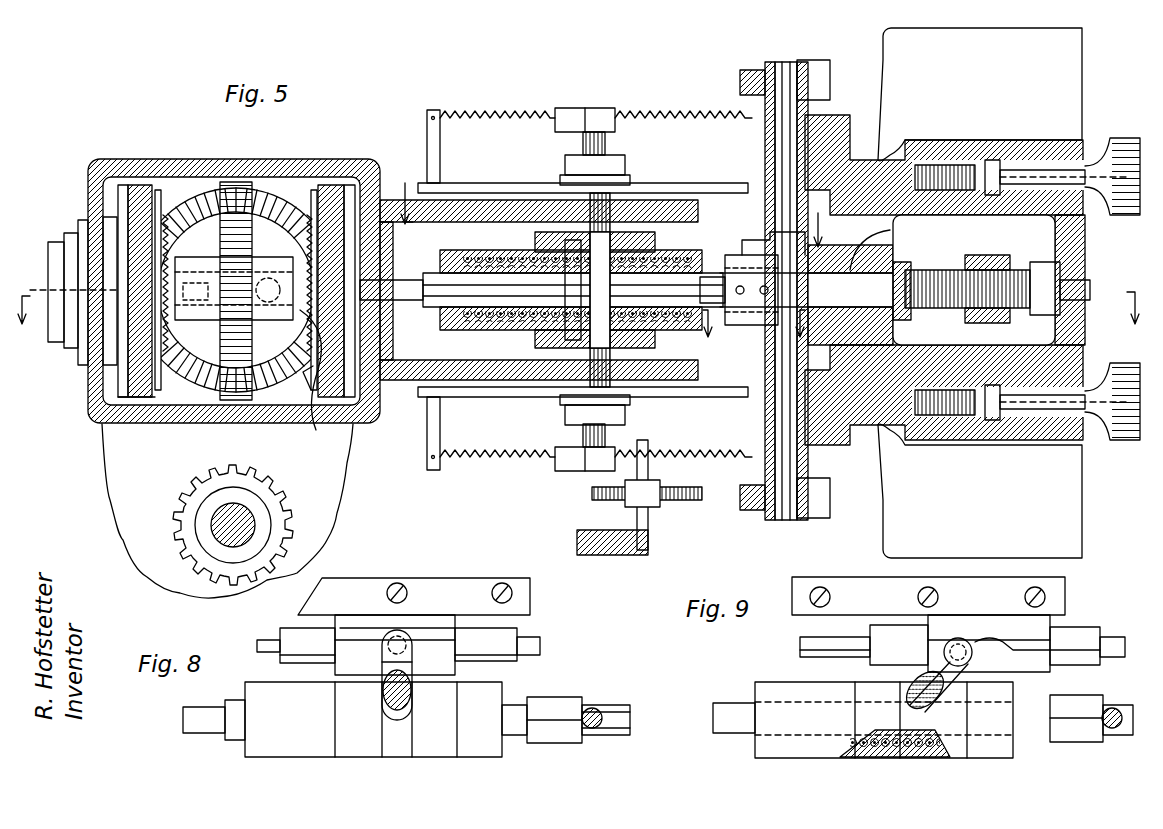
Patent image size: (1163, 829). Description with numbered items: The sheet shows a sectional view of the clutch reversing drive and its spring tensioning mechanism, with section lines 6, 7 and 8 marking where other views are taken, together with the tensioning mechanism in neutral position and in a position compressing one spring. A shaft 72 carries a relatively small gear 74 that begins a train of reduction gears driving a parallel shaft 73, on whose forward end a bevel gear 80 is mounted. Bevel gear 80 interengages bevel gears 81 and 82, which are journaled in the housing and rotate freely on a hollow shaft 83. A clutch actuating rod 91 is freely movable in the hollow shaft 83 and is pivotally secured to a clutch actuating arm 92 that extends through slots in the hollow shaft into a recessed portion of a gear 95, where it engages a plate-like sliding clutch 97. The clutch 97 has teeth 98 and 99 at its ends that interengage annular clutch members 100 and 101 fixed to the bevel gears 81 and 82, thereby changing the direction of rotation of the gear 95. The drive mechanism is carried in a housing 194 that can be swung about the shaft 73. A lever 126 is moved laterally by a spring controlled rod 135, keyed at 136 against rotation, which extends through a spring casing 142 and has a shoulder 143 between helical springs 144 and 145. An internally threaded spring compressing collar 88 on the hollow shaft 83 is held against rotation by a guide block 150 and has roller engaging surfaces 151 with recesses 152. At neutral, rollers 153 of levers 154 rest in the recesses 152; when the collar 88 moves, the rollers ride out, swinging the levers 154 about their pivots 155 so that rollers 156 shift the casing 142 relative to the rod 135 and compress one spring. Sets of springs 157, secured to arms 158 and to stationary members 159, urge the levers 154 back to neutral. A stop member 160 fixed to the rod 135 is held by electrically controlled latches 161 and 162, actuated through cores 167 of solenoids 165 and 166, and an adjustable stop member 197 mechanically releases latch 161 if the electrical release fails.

In FIG. 5, the section line 6 is at (578, 303).
In FIG. 5, the section line 7 is at (760, 337).
In FIG. 5, the section line 8 is at (610, 203).
In FIG. 5, the shaft 72 is at (215, 509).
In FIG. 5, the shaft 73 is at (266, 284).
In FIG. 5, the gear 74 is at (280, 491).
In FIG. 5, the bevel gear 80 is at (194, 200).
In FIG. 5, the bevel gear 81 is at (333, 188).
In FIG. 5, the bevel gear 82 is at (146, 188).
In FIG. 8, the hollow shaft 83 is at (555, 682).
In FIG. 9, the hollow shaft 83 is at (1102, 644).
In FIG. 8, the spring compressing collar 88 is at (434, 628).
In FIG. 9, the spring compressing collar 88 is at (963, 622).
In FIG. 8, the clutch actuating rod 91 is at (280, 644).
In FIG. 9, the clutch actuating rod 91 is at (868, 632).
In FIG. 5, the clutch actuating arm 92 is at (190, 284).
In FIG. 5, the gear 95 is at (240, 182).
In FIG. 5, the sliding clutch 97 is at (308, 310).
In FIG. 5, the teeth 98 is at (302, 360).
In FIG. 5, the teeth 99 is at (165, 314).
In FIG. 5, the annular clutch member 100 is at (314, 412).
In FIG. 5, the annular clutch member 101 is at (157, 356).
In FIG. 5, the lever 126 is at (978, 258).
In FIG. 5, the spring controlled rod 135 is at (898, 266).
In FIG. 8, the spring controlled rod 135 is at (625, 710).
In FIG. 9, the spring controlled rod 135 is at (719, 700).
In FIG. 5, the key 136 is at (865, 254).
In FIG. 5, the spring casing 142 is at (470, 340).
In FIG. 8, the spring casing 142 is at (264, 692).
In FIG. 9, the spring casing 142 is at (755, 744).
In FIG. 5, the shoulder 143 is at (563, 286).
In FIG. 5, the helical spring 144 is at (660, 267).
In FIG. 9, the helical spring 144 is at (910, 704).
In FIG. 5, the helical spring 145 is at (500, 260).
In FIG. 9, the helical spring 145 is at (855, 737).
In FIG. 8, the guide block 150 is at (378, 569).
In FIG. 9, the guide block 150 is at (825, 574).
In FIG. 8, the roller engaging surfaces 151 is at (470, 602).
In FIG. 9, the roller engaging surfaces 151 is at (1074, 636).
In FIG. 8, the recesses 152 is at (418, 602).
In FIG. 9, the recesses 152 is at (985, 621).
In FIG. 5, the rollers 153 is at (610, 222).
In FIG. 8, the rollers 153 is at (341, 630).
In FIG. 9, the rollers 153 is at (995, 647).
In FIG. 5, the levers 154 is at (605, 167).
In FIG. 8, the levers 154 is at (382, 664).
In FIG. 9, the levers 154 is at (920, 666).
In FIG. 5, the pivot 155 is at (605, 136).
In FIG. 8, the pivot 155 is at (384, 701).
In FIG. 8, the rollers 156 is at (402, 714).
In FIG. 5, the springs 157 is at (495, 120).
In FIG. 5, the arms 158 is at (590, 108).
In FIG. 5, the stationary members 159 is at (466, 184).
In FIG. 5, the stop member 160 is at (735, 247).
In FIG. 8, the stop member 160 is at (537, 697).
In FIG. 9, the stop member 160 is at (1085, 694).
In FIG. 5, the latch 161 is at (772, 342).
In FIG. 5, the latch 162 is at (764, 236).
In FIG. 8, the latch 162 is at (580, 708).
In FIG. 9, the latch 162 is at (1114, 714).
In FIG. 5, the solenoid 165 is at (1078, 500).
In FIG. 5, the solenoid 166 is at (1078, 68).
In FIG. 5, the cores 167 is at (820, 72).
In FIG. 5, the housing 194 is at (402, 381).
In FIG. 5, the adjustable stop member 197 is at (666, 502).